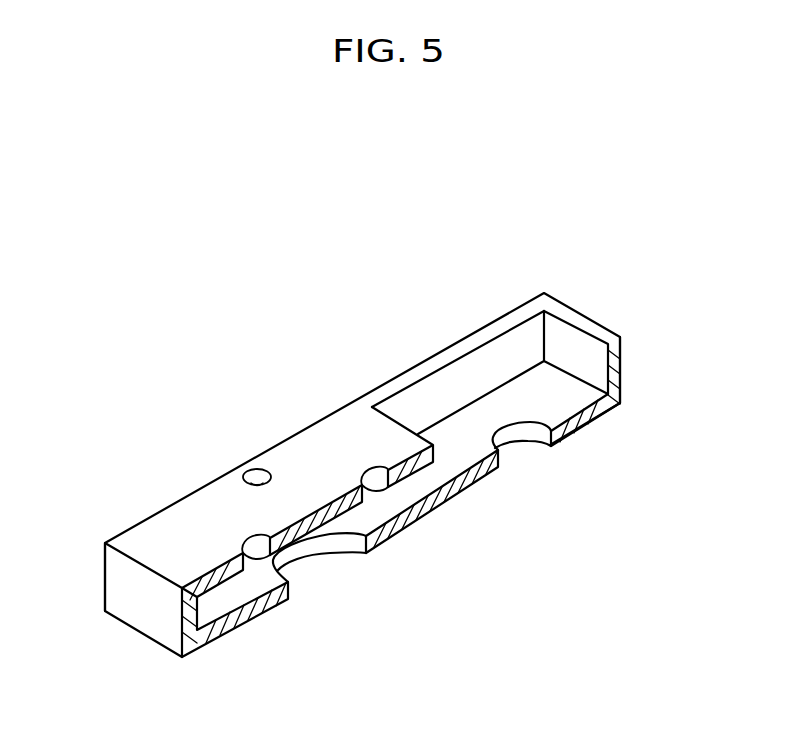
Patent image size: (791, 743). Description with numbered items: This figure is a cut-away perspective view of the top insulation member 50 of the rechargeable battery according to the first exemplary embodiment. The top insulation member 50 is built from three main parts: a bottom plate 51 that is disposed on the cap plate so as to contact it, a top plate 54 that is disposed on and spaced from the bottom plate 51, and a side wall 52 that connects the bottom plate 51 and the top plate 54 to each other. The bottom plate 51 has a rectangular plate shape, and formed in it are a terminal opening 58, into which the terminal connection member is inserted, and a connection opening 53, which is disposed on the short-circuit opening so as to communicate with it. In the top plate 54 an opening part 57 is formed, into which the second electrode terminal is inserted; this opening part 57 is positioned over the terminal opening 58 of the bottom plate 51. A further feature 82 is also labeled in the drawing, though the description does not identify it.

The top insulation member 50 is at (596, 303).
The bottom plate 51 is at (550, 408).
The side wall 52 is at (152, 610).
The connection opening 53 is at (348, 536).
The top plate 54 is at (163, 535).
The opening part 57 is at (467, 360).
The terminal opening 58 is at (511, 436).
The fastening hole 82 is at (250, 545).